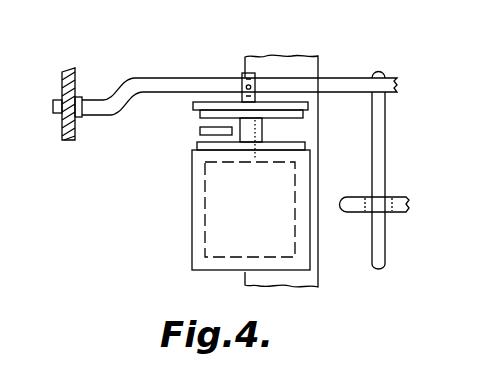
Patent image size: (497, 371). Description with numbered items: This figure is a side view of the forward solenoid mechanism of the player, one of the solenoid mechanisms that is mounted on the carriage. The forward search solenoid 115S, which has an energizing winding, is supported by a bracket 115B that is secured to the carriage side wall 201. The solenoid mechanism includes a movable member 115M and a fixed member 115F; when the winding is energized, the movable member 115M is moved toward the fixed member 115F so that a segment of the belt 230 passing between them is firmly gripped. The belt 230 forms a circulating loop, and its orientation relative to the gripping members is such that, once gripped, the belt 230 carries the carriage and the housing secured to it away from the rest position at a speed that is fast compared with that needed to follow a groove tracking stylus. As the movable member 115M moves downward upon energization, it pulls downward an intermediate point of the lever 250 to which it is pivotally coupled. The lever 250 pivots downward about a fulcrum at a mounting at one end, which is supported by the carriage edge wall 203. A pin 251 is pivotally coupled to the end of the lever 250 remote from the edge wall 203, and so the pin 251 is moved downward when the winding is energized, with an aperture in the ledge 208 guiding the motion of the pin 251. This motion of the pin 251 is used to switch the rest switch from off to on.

The carriage side wall 201 is at (290, 56).
The lever 250 is at (156, 78).
The pin 251 is at (387, 143).
The ledge 208 is at (410, 210).
The carriage edge wall 203 is at (68, 142).
The movable member 115M is at (318, 105).
The belt 230 is at (200, 129).
The fixed member 115F is at (298, 138).
The bracket 115B is at (217, 272).
The forward search solenoid 115S is at (193, 188).